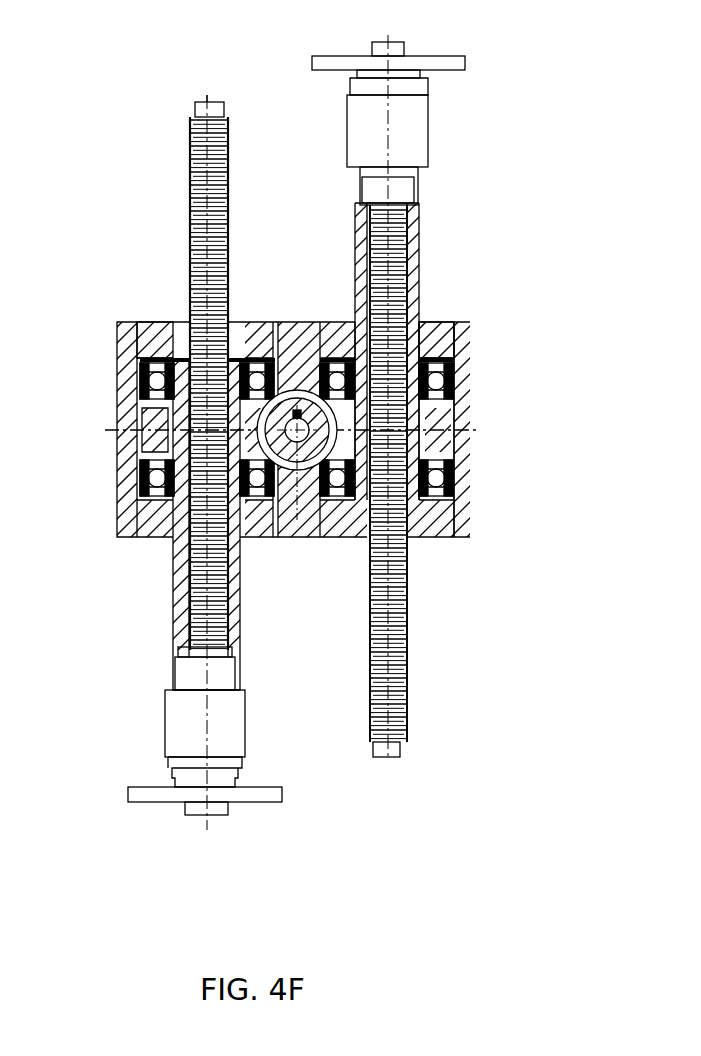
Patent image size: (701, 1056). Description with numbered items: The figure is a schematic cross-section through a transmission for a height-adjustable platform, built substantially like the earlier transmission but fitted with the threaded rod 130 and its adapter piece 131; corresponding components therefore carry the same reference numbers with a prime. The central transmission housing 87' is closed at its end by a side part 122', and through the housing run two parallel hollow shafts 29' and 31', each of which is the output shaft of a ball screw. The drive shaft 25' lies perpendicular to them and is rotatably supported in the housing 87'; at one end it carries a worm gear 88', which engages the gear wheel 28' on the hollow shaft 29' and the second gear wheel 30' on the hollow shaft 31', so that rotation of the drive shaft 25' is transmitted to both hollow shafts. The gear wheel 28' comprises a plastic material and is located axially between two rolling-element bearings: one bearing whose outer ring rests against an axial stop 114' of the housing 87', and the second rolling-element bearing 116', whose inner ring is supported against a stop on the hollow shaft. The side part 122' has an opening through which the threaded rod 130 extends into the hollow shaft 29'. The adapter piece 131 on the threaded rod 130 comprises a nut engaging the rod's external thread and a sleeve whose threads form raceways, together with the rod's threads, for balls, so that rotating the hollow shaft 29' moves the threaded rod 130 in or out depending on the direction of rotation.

The adapter piece 131 is at (390, 125).
The hollow shaft 29' is at (443, 322).
The side part 122' is at (302, 273).
The transmission housing 87' is at (512, 413).
The axial stop 114' is at (357, 379).
The gear wheel 28' is at (360, 429).
The second rolling-element bearing 116' is at (365, 520).
The threaded rod 130 is at (405, 645).
The second gear wheel 30' is at (91, 474).
The hollow shaft 31' is at (163, 462).
The worm gear 88' is at (290, 646).
The drive shaft 25' is at (350, 533).